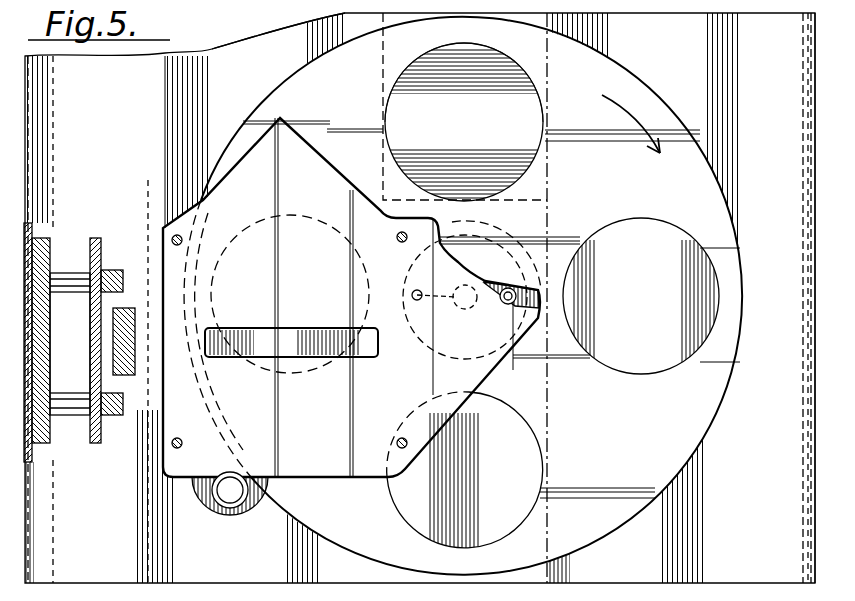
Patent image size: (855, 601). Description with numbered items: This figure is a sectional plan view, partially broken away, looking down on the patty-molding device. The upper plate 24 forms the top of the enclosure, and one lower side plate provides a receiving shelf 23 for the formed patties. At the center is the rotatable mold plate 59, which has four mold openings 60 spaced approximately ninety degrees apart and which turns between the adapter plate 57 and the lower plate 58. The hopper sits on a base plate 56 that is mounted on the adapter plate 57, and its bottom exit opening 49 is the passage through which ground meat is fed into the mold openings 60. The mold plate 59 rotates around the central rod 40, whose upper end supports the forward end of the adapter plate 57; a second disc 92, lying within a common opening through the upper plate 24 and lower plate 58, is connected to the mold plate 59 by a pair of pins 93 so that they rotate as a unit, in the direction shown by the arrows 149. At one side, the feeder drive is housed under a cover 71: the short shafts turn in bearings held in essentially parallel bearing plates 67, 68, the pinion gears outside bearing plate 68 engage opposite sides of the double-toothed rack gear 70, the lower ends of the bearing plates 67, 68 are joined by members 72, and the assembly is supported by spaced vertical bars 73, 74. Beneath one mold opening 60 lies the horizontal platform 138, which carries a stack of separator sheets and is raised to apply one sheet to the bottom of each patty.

The receiving shelf 23 is at (763, 214).
The upper plate 24 is at (207, 83).
The rod 40 is at (467, 309).
The bottom exit opening 49 is at (300, 333).
The base plate 56 is at (308, 150).
The adapter plate 57 is at (527, 300).
The lower plate 58 is at (483, 213).
The mold plate 59 is at (707, 385).
The mold openings 60 is at (535, 85).
The bearing plate 67 is at (38, 237).
The bearing plate 68 is at (95, 240).
The rack gear 70 is at (127, 308).
The cover 71 is at (28, 228).
The members 72 is at (63, 281).
The bar 73 is at (115, 270).
The bar 74 is at (115, 417).
The second disc 92 is at (482, 253).
The pins 93 is at (413, 292).
The platform 138 is at (448, 138).
The arrows 149 is at (642, 132).